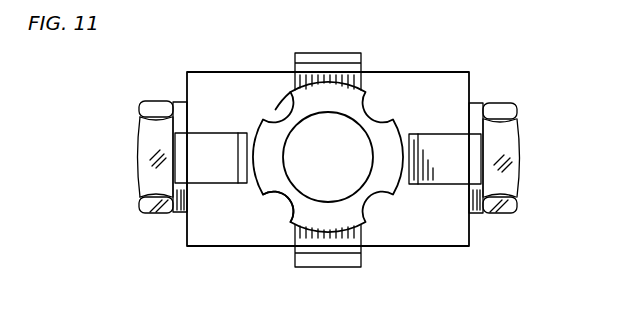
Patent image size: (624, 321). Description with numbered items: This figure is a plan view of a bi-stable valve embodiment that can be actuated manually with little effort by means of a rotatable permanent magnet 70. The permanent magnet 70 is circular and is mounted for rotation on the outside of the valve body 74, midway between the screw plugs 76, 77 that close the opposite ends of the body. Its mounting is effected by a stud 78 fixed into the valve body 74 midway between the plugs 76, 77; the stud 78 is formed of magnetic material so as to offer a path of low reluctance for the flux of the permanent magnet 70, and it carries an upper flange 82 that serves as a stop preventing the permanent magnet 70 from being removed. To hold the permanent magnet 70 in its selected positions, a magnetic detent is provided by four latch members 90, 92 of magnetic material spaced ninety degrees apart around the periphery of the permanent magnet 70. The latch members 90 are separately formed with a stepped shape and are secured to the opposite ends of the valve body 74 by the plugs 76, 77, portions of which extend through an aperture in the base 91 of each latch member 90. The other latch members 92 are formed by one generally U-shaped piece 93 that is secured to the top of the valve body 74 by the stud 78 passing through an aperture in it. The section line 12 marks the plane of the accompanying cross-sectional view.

The section line 12- 12 is at (142, 158).
The permanent magnet 70 is at (383, 130).
The valve body 74 is at (232, 242).
The screw plug 76 is at (147, 208).
The screw plug 77 is at (507, 212).
The stud 78 is at (297, 123).
The upper flange 82 is at (294, 201).
The magnetic latch member 90 is at (239, 161).
The base of latch member 91 is at (180, 102).
The magnetic latch member 92 is at (323, 55).
The U-shaped piece 93 is at (354, 248).